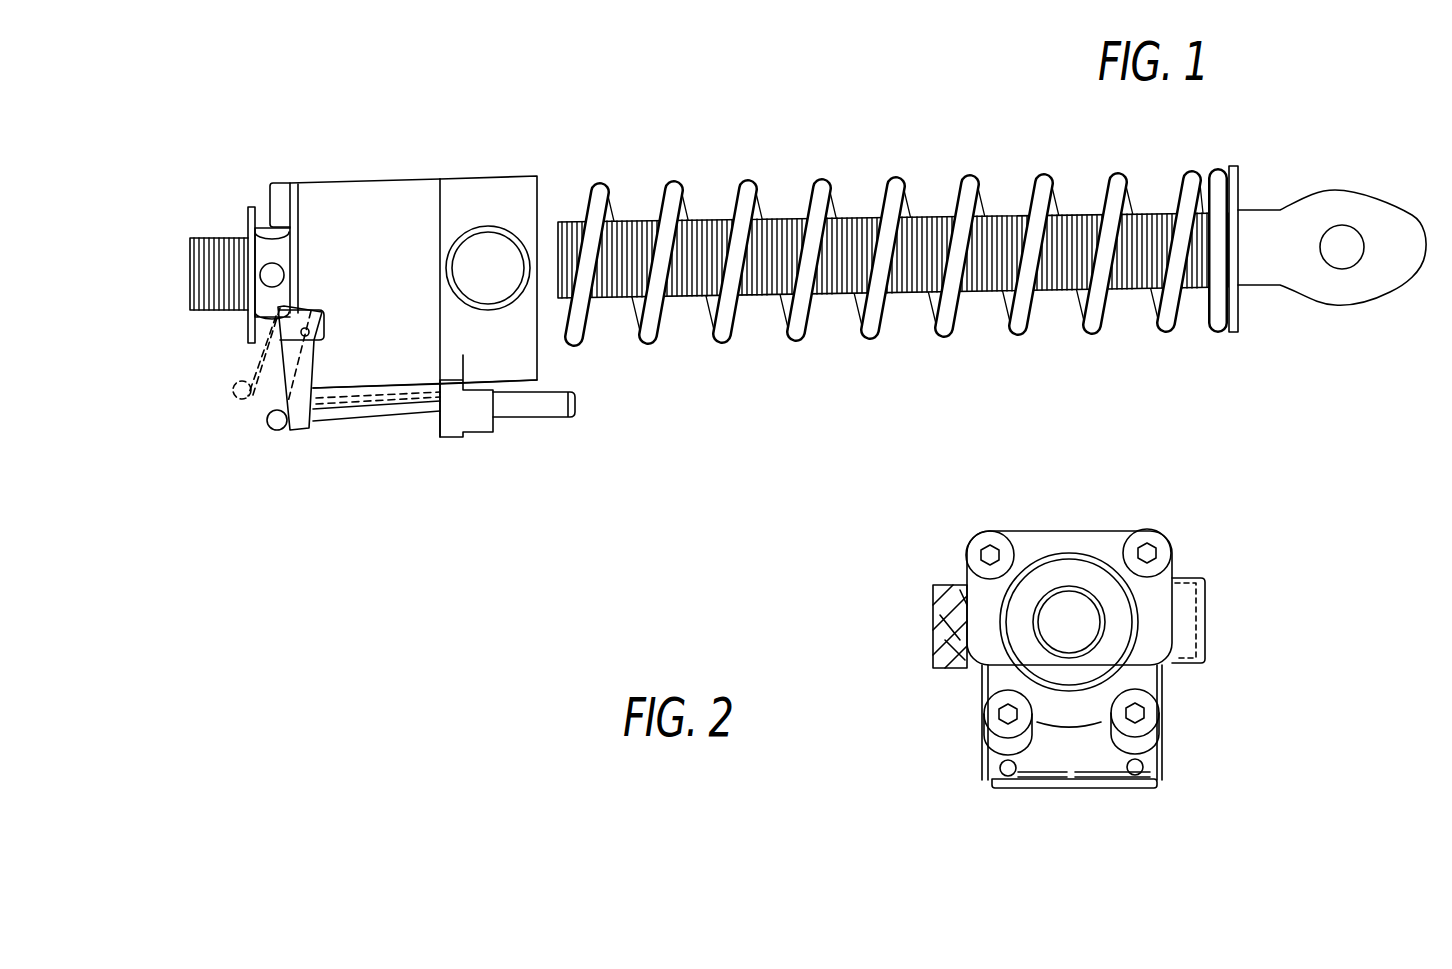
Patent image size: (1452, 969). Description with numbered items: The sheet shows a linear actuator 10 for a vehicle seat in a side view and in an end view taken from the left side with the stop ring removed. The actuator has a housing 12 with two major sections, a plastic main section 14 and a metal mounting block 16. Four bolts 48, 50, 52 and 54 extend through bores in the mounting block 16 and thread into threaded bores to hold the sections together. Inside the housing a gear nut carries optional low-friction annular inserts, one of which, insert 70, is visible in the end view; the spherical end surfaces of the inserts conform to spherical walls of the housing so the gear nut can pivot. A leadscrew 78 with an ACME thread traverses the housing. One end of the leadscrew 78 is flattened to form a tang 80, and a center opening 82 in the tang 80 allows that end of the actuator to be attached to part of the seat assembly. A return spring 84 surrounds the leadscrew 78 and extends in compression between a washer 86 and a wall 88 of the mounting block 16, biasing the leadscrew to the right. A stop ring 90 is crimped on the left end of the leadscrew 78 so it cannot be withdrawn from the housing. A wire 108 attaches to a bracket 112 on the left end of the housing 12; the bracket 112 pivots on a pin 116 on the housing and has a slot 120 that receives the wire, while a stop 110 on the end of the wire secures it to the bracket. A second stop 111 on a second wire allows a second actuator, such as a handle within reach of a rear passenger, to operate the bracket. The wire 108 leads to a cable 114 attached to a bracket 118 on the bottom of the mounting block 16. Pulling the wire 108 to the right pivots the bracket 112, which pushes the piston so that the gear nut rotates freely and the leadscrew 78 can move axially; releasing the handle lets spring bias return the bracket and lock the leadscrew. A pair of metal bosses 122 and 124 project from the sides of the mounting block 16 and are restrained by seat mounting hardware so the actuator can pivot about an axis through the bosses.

In FIG. 1, the linear actuator 10 is at (721, 127).
In FIG. 1, the housing 12 is at (437, 178).
In FIG. 1, the main section 14 is at (365, 178).
In FIG. 1, the mounting block 16 is at (468, 178).
In FIG. 2, the bolt 48 is at (988, 553).
In FIG. 1, the bolt 50 is at (275, 182).
In FIG. 2, the bolt 50 is at (1148, 553).
In FIG. 2, the bolt 52 is at (1165, 725).
In FIG. 2, the bolt 54 is at (1005, 713).
In FIG. 2, the annular insert 70 is at (1157, 690).
In FIG. 1, the leadscrew 78 is at (855, 213).
In FIG. 1, the tang 80 is at (1382, 213).
In FIG. 1, the center opening 82 is at (1343, 258).
In FIG. 1, the return spring 84 is at (796, 347).
In FIG. 1, the washer 86 is at (1233, 335).
In FIG. 1, the wall 88 is at (540, 356).
In FIG. 1, the stop ring 90 is at (255, 215).
In FIG. 1, the wire 108 is at (335, 424).
In FIG. 1, the stop 110 is at (277, 430).
In FIG. 2, the stop 110 is at (1160, 780).
In FIG. 2, the stop 111 is at (1005, 780).
In FIG. 1, the bracket 112 is at (280, 350).
In FIG. 2, the bracket 112 is at (1098, 790).
In FIG. 1, the cable 114 is at (528, 417).
In FIG. 1, the pin 116 is at (325, 324).
In FIG. 1, the bracket 118 is at (455, 437).
In FIG. 2, the slot 120 is at (1068, 778).
In FIG. 2, the boss 122 is at (945, 590).
In FIG. 1, the boss 124 is at (486, 267).
In FIG. 2, the boss 124 is at (1190, 618).